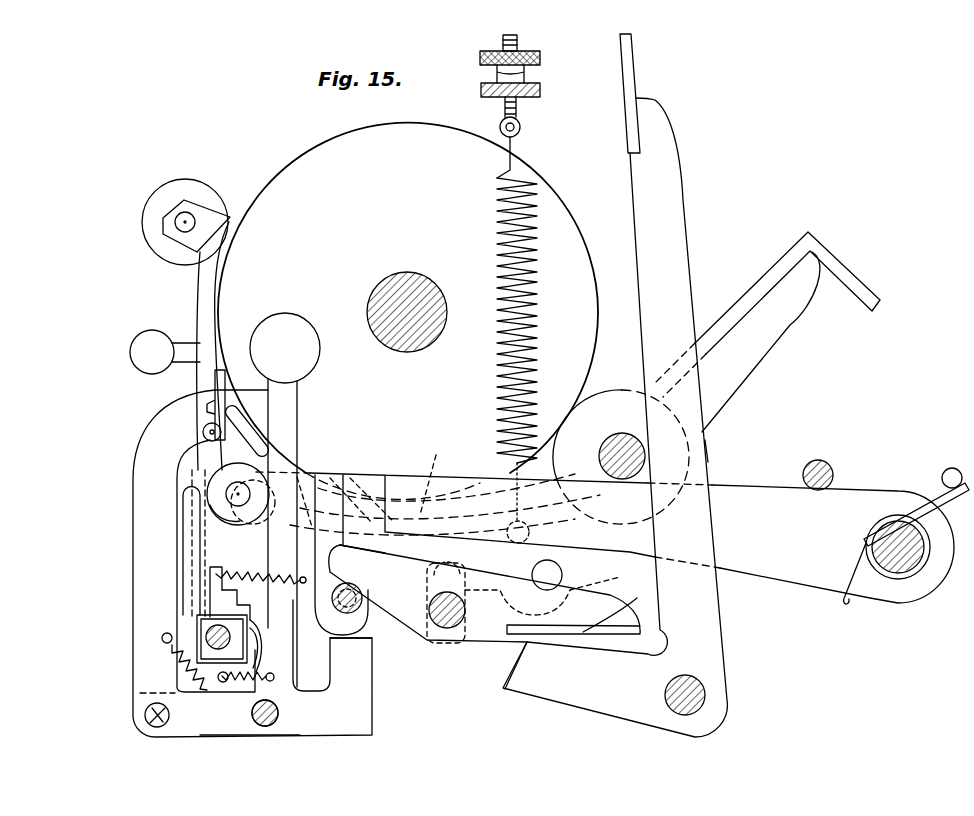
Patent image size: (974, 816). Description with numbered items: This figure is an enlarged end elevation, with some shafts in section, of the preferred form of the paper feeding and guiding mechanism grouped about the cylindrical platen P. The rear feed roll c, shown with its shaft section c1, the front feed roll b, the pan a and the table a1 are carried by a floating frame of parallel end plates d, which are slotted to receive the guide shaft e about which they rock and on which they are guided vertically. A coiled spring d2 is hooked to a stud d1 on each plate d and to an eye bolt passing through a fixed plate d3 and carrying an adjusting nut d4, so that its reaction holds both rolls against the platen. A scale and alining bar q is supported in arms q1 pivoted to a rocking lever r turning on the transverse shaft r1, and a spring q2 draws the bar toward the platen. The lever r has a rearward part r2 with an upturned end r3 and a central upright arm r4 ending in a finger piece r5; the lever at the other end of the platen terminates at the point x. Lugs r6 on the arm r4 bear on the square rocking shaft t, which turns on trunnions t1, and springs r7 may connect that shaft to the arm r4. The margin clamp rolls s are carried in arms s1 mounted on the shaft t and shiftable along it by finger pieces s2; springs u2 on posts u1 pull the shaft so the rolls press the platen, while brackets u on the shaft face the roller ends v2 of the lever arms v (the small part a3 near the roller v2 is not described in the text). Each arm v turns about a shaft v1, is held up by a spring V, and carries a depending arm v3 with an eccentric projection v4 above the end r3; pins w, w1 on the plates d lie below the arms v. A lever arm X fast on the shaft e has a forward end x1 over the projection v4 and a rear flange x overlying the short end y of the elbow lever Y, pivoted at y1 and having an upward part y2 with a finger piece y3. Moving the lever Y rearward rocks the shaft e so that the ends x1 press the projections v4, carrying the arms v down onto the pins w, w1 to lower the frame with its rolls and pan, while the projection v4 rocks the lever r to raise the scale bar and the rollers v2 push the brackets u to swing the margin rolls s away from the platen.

The drum P is at (408, 311).
The margin clamp roll s is at (142, 222).
The vertically disposed arm s1 is at (197, 292).
The finger piece s2 is at (134, 342).
The scale and alining bar q is at (217, 381).
The arm q1 is at (135, 503).
The spring q2 is at (170, 660).
The rocking lever r is at (249, 726).
The transverse shaft r1 is at (271, 720).
The rearwardly extending horizontal part r2 is at (318, 715).
The upturned end r3 is at (355, 661).
The central arm r4 is at (284, 612).
The finger piece r5 is at (284, 328).
The forwardly projecting lug r6 is at (267, 646).
The spring r7 is at (243, 680).
The rocking shaft t is at (200, 637).
The trunnion t1 is at (162, 640).
The projection or bracket u is at (195, 546).
The vertical post u1 is at (220, 606).
The spring u2 is at (220, 553).
The laterally projecting flange or plate x is at (433, 601).
The roller v2 is at (212, 463).
The link a3 is at (233, 415).
The front feed roll b is at (229, 437).
The projecting arm v3 is at (318, 520).
The adjustable eccentrically mounted projection v4 is at (380, 607).
The forward end of lever arm x1 is at (362, 548).
The lever arm v is at (758, 489).
The transverse shaft v1 is at (902, 556).
The spring V is at (938, 498).
The elbow lever Y is at (700, 657).
The short end y is at (532, 648).
The pivot y1 is at (690, 702).
The upwardly extended part y2 is at (709, 458).
The finger piece y3 is at (636, 66).
The rear feed roll c is at (606, 391).
The hub c1 is at (623, 450).
The table a1 is at (738, 300).
The end frame plate d is at (752, 352).
The projecting stud or lug d1 is at (530, 533).
The coiled spring d2 is at (538, 302).
The fixed plate of carriage frame d3 is at (542, 91).
The adjusting nut d4 is at (542, 56).
The pan a is at (431, 472).
The lever arm X is at (472, 645).
The guide shaft e is at (447, 620).
The lateral pin or projection w is at (563, 575).
The lateral pin or projection w1 is at (412, 558).